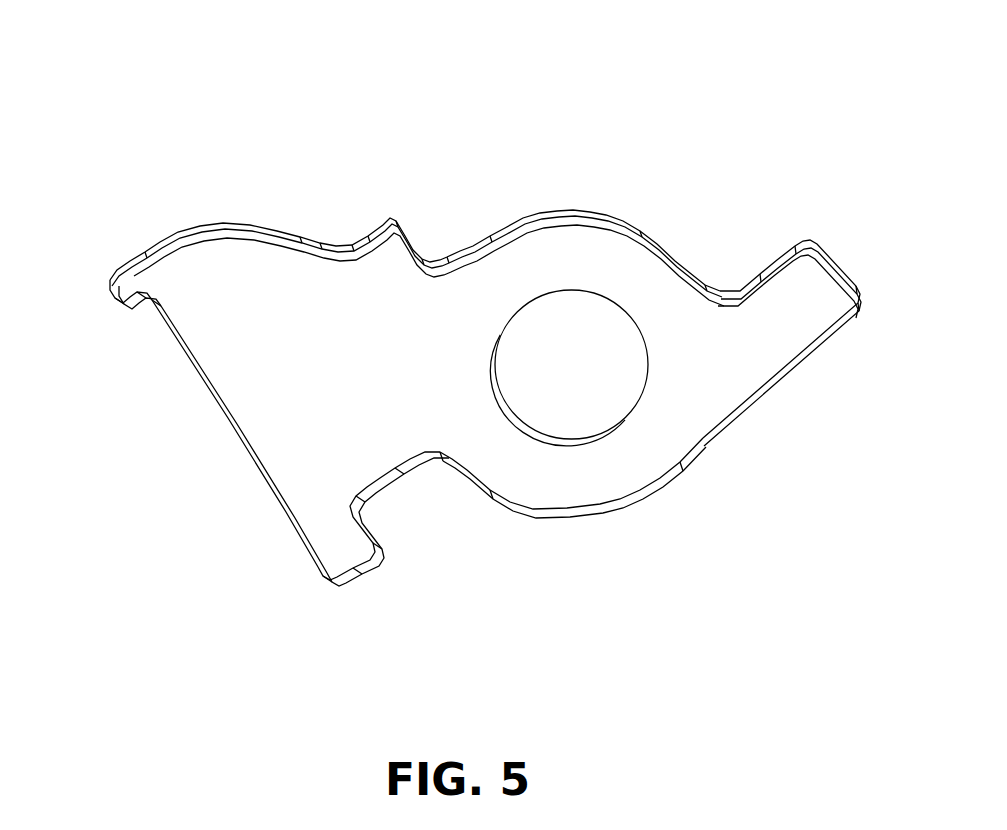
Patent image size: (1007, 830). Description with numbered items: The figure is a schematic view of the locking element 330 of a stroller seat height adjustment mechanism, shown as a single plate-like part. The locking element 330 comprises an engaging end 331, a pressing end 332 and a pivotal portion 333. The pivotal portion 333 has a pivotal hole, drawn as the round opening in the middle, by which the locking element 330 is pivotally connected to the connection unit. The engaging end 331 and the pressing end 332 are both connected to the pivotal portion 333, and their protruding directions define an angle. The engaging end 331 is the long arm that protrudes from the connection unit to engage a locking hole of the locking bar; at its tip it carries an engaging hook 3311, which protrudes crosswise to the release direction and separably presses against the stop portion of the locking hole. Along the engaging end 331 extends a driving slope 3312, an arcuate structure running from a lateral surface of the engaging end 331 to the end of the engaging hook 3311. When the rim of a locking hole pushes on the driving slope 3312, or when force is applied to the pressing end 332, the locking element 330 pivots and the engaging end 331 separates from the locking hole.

The locking element 330 is at (103, 37).
The engaging end 331 is at (242, 322).
The engaging hook 3311 is at (110, 293).
The driving slope 3312 is at (214, 225).
The pressing end 332 is at (792, 307).
The pivotal portion 333 is at (567, 473).